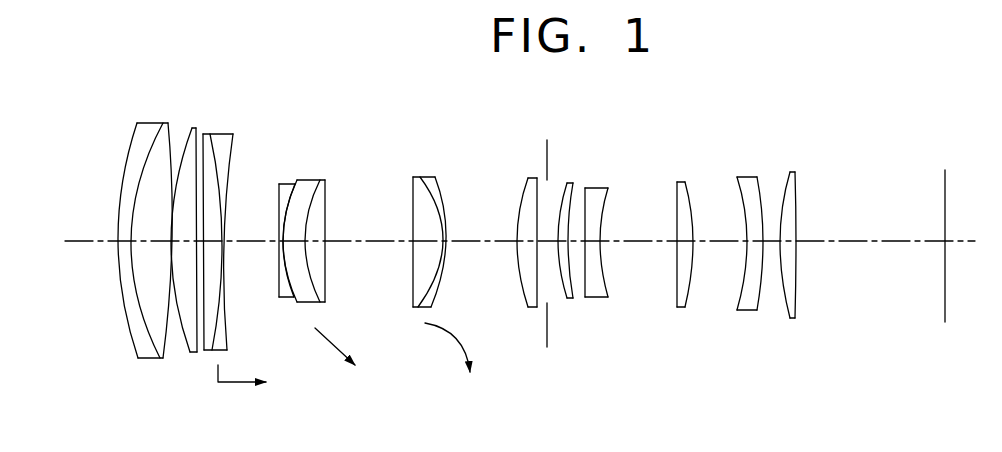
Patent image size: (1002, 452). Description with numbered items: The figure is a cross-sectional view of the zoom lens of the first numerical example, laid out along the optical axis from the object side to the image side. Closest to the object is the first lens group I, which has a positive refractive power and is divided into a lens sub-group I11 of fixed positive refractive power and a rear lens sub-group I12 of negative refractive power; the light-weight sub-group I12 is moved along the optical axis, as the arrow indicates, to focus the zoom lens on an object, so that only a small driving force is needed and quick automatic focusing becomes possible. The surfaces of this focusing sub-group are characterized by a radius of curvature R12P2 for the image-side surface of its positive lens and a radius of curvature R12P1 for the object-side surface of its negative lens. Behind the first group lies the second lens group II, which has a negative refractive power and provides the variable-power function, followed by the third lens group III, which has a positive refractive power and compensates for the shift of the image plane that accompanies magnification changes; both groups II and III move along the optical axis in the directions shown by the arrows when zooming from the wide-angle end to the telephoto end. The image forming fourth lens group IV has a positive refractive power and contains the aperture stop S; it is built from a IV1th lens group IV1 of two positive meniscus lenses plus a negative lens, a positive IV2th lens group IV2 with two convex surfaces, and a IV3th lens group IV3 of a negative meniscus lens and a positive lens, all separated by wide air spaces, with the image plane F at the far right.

The first lens group I is at (248, 67).
The lens sub-group I11 is at (195, 101).
The lens sub-group I12 is at (240, 101).
The second lens group II is at (272, 157).
The third lens group III is at (443, 157).
The fourth lens group IV is at (520, 140).
The IV1th lens group IV1 is at (620, 375).
The IV2th lens group IV2 is at (702, 349).
The IV3th lens group IV3 is at (800, 339).
The aperture stop S is at (547, 320).
The image plane / film F is at (945, 318).
The radius of curvature of the surface of the positive lens close to the image plane R12P2 is at (207, 283).
The radius of curvature of the surface of the negative lens close to the object R12P1 is at (222, 322).